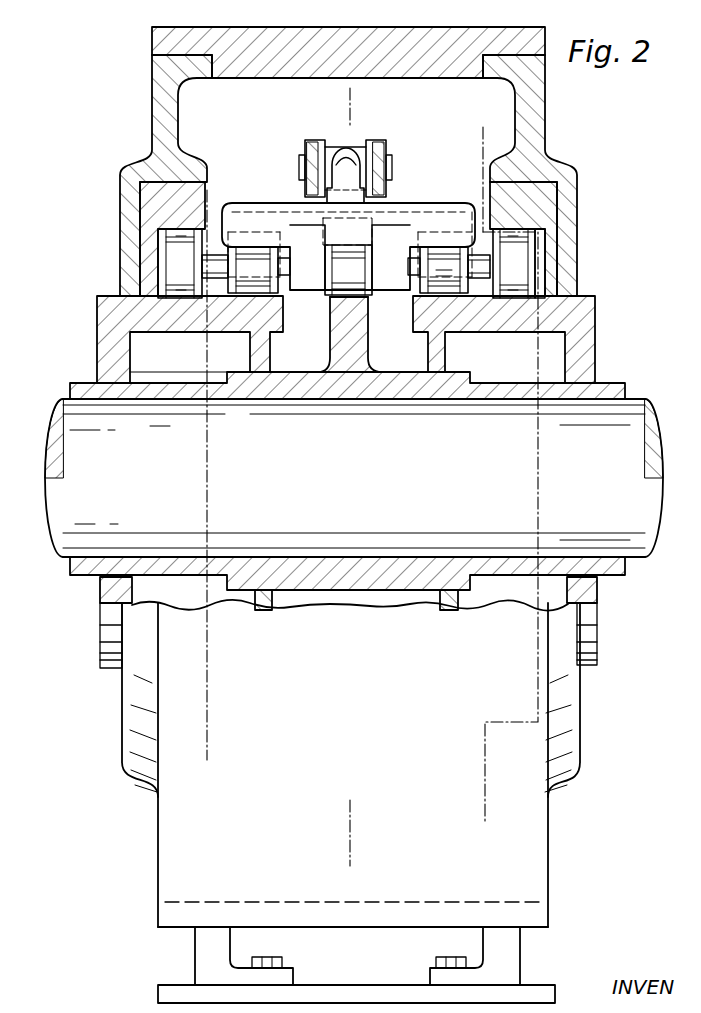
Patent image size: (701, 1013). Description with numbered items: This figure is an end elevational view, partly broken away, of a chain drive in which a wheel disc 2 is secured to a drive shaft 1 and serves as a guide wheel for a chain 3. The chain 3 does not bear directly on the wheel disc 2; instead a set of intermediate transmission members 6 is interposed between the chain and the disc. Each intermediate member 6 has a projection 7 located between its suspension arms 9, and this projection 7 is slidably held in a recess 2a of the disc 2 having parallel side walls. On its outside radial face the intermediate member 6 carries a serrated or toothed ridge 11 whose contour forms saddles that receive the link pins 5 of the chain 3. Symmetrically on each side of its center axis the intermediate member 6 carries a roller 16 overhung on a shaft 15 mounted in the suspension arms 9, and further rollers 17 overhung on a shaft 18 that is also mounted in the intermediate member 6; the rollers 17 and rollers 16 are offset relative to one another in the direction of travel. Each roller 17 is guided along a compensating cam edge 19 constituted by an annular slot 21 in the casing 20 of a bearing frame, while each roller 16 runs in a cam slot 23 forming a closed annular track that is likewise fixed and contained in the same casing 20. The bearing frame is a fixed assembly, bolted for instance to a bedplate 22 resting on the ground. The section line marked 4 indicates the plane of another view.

The drive shaft 1 is at (620, 415).
The wheel disc 2 is at (352, 348).
The recesses 2a is at (345, 298).
The chain 3 is at (322, 88).
The contact pad 4 is at (381, 145).
The link pins 5 is at (358, 180).
The intermediate transmission members 6 is at (394, 205).
The projection 7 is at (352, 290).
The suspension arms 9 is at (393, 291).
The serrated or toothed ridge 11 is at (344, 192).
The shaft 15 is at (433, 282).
The roller 16 is at (450, 275).
The rollers 17 is at (512, 275).
The shaft 18 is at (480, 270).
The compensating cam edge 19 is at (527, 300).
The casing 20 is at (548, 203).
The annular slot 21 is at (540, 253).
The bedplate 22 is at (531, 970).
The cam slot 23 is at (440, 280).